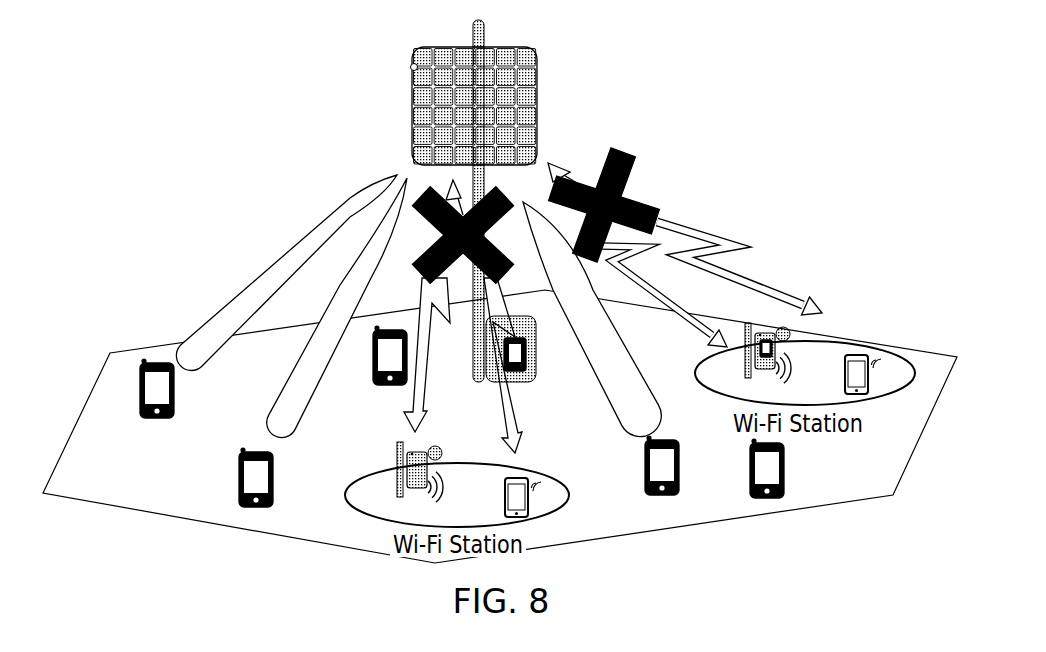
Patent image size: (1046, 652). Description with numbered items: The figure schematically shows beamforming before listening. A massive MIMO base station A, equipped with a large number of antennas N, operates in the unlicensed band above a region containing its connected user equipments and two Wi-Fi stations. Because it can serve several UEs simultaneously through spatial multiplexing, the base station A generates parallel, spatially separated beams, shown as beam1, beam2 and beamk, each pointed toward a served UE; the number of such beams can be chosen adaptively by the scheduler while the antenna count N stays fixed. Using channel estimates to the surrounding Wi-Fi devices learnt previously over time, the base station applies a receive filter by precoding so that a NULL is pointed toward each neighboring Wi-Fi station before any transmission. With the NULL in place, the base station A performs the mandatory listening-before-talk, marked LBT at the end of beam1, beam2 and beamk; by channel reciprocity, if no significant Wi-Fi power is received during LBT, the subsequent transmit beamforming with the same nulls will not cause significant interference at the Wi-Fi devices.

The first beam beam1 is at (286, 272).
The second beam beam2 is at (327, 308).
The k-th beam beamk is at (594, 319).
The listening-before-talk LBT is at (422, 368).
The null NULL is at (535, 215).
The massive MIMO base station A is at (554, 201).
The antennas N is at (547, 106).